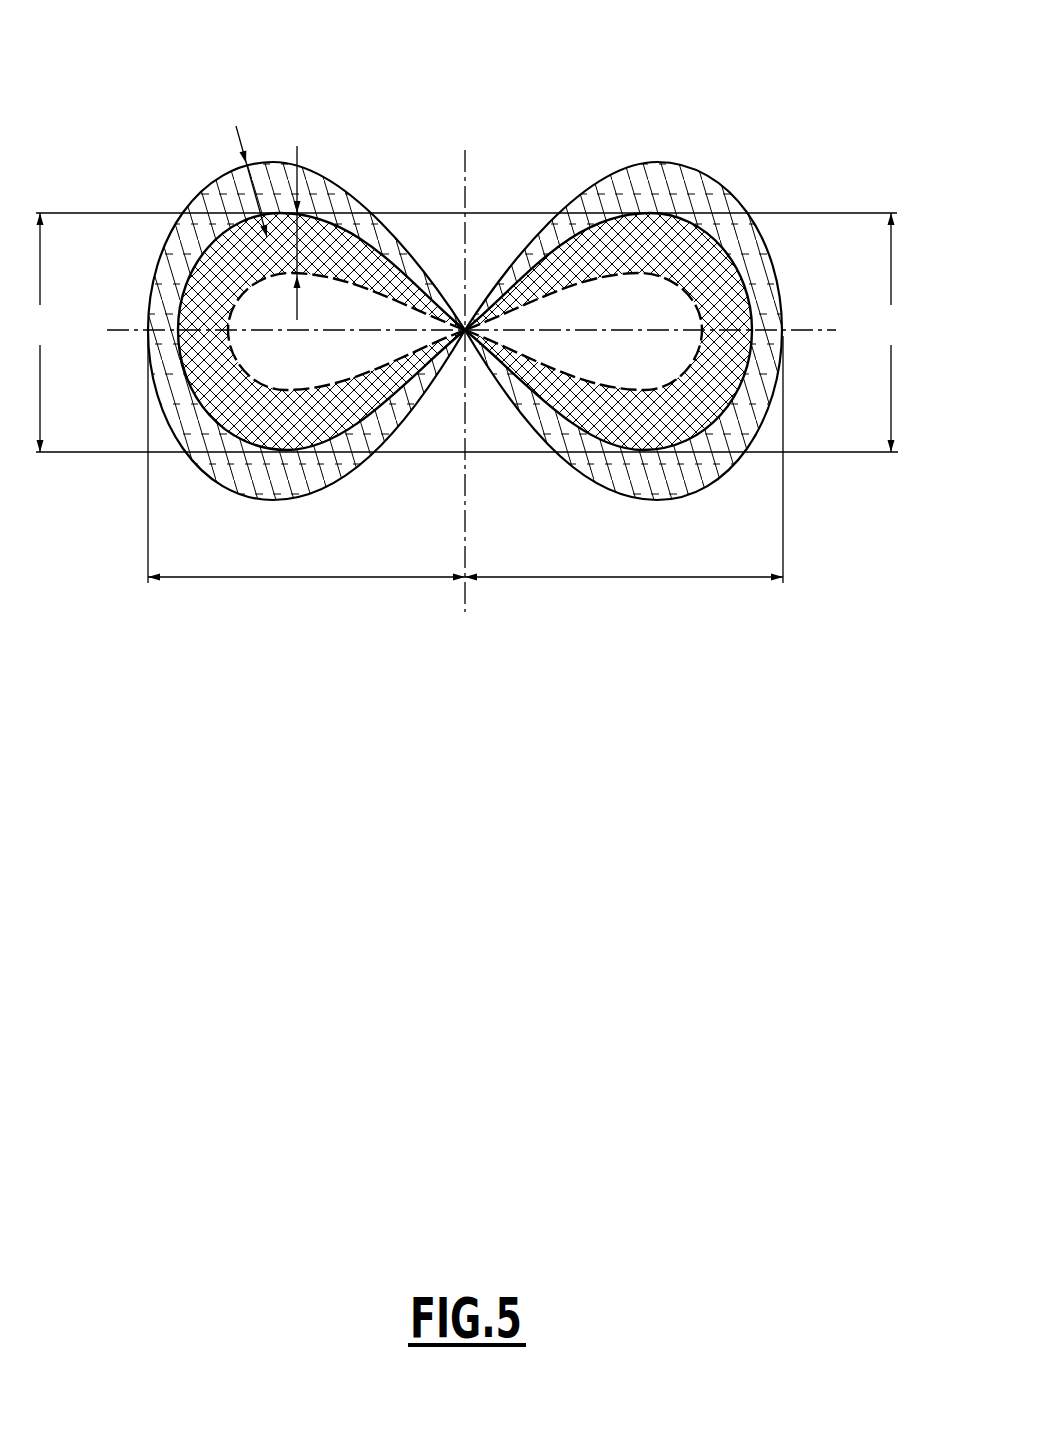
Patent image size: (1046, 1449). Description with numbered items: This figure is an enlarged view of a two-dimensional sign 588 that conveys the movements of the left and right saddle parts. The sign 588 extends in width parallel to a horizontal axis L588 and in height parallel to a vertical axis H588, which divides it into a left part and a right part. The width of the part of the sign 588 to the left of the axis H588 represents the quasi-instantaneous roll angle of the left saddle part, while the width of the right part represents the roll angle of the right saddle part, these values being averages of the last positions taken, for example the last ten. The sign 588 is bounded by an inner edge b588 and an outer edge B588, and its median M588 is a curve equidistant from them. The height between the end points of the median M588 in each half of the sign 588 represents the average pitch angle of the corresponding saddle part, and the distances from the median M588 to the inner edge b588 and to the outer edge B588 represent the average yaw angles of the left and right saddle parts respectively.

The sign 588 is at (481, 256).
The outer edge B588 is at (581, 191).
The median M588 is at (637, 213).
The inner edge b588 is at (599, 280).
The axis H588 is at (475, 366).
The axis L588 is at (479, 318).